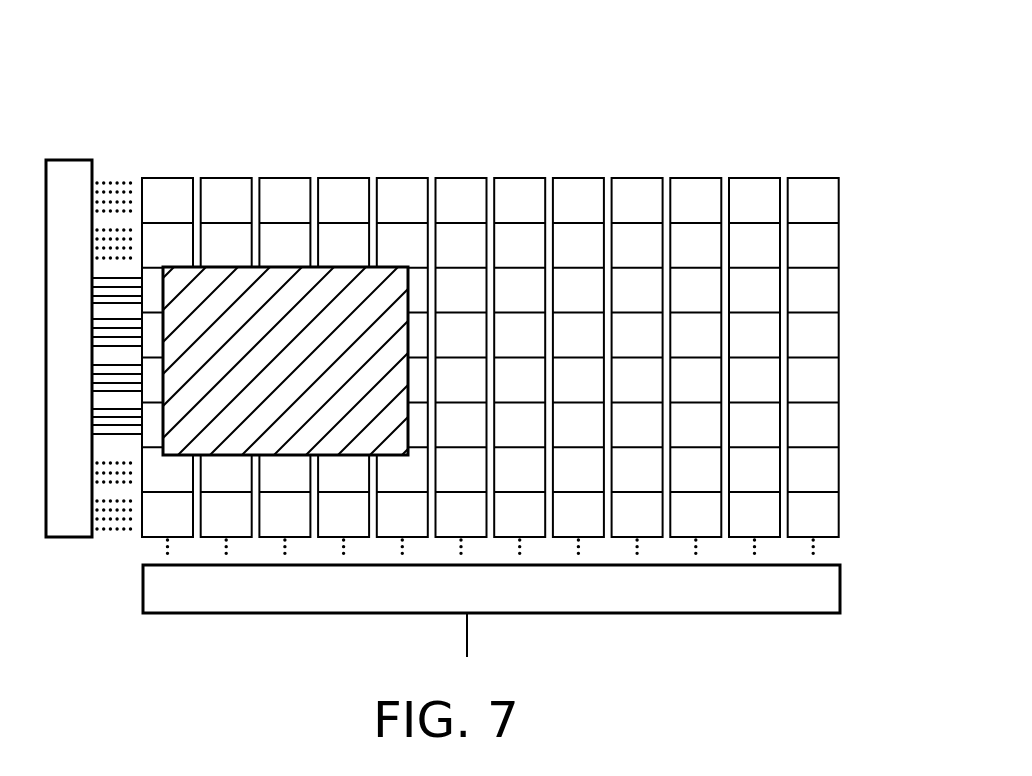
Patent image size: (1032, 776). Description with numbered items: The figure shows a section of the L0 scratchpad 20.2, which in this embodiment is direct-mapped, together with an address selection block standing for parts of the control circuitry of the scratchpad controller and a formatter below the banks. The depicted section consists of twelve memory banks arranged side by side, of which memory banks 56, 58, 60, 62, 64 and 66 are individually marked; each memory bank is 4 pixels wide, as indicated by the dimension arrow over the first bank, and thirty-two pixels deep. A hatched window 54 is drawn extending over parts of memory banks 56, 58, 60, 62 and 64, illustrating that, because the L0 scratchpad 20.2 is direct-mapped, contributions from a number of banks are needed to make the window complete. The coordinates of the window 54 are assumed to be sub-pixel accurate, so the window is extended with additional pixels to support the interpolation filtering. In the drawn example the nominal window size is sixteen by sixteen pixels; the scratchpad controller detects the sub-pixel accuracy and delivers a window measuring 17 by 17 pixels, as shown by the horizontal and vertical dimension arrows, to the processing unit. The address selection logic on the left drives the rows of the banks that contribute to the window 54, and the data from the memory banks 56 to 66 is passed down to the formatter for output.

The L0 scratchpad 20.2 is at (428, 328).
The window 54 is at (183, 290).
The memory bank 56 is at (183, 177).
The memory bank 58 is at (243, 177).
The memory bank 60 is at (297, 177).
The memory bank 62 is at (355, 177).
The memory bank 64 is at (413, 177).
The memory bank 66 is at (805, 177).
The window dimension 17 is at (408, 252).
The memory bank width 4 is at (192, 162).